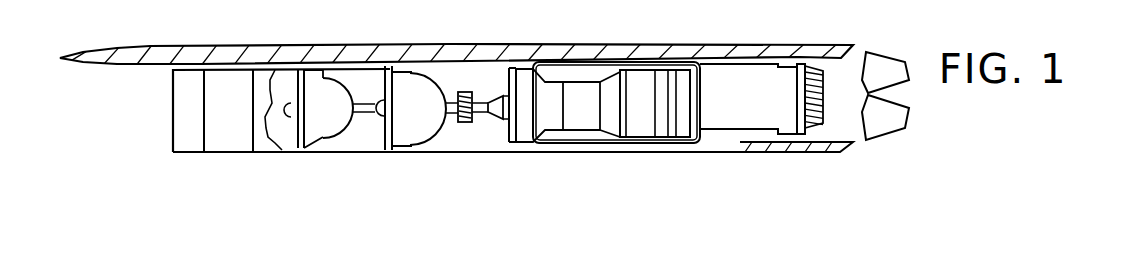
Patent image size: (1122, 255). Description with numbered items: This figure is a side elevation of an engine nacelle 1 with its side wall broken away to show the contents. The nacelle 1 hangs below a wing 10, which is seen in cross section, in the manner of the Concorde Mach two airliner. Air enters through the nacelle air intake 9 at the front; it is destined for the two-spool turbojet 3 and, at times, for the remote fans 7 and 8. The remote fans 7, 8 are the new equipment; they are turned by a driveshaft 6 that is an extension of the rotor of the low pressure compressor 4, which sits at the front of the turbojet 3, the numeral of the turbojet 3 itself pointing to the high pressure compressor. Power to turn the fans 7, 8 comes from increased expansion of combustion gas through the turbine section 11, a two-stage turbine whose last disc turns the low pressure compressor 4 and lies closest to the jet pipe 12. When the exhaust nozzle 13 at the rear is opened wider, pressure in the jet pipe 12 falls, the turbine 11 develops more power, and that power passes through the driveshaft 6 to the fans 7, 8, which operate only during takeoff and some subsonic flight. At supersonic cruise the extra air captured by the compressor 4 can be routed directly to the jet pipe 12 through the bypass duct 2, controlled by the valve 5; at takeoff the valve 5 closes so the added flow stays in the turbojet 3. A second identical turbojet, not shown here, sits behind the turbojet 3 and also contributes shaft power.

The nacelle 1 is at (763, 160).
The bypass duct 2 is at (600, 67).
The two-spool turbojet 3 is at (597, 131).
The low pressure compressor 4 is at (543, 118).
The valve 5 is at (526, 145).
The driveshaft 6 is at (480, 108).
The remote fan 7 is at (400, 130).
The remote fan 8 is at (314, 128).
The nacelle air intake 9 is at (168, 137).
The wing 10 is at (140, 65).
The turbine section 11 is at (662, 118).
The jet pipe 12 is at (750, 111).
The exhaust nozzle 13 is at (824, 71).